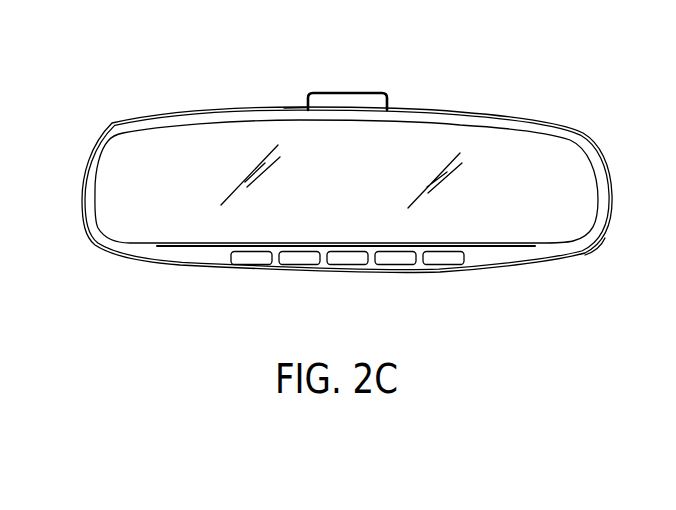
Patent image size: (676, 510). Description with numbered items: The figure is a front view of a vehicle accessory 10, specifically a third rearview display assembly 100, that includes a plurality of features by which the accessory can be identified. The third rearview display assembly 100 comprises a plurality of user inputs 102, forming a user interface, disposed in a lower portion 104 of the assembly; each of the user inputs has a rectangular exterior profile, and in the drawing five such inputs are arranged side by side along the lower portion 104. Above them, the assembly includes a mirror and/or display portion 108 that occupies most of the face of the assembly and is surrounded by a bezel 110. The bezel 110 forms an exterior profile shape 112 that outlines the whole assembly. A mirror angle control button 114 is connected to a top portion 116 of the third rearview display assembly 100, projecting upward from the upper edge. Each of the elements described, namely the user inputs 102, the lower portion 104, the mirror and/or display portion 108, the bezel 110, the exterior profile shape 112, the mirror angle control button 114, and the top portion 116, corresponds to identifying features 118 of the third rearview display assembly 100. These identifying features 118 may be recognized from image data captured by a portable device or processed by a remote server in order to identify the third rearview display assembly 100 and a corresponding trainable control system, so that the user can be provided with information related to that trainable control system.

The vehicle accessory 10 is at (485, 66).
The third rearview display assembly 100 is at (137, 122).
The user inputs 102 is at (433, 260).
The lower portion 104 is at (476, 269).
The mirror and/or display portion 108 is at (141, 211).
The bezel 110 is at (563, 131).
The exterior profile shape 112 is at (600, 244).
The mirror angle control button 114 is at (350, 102).
The top portion 116 is at (297, 105).
The identifying features 118 is at (551, 61).